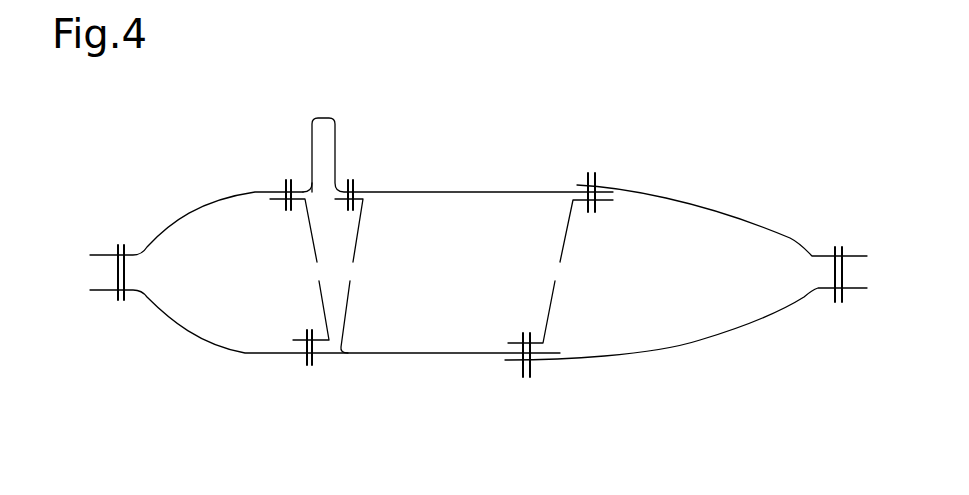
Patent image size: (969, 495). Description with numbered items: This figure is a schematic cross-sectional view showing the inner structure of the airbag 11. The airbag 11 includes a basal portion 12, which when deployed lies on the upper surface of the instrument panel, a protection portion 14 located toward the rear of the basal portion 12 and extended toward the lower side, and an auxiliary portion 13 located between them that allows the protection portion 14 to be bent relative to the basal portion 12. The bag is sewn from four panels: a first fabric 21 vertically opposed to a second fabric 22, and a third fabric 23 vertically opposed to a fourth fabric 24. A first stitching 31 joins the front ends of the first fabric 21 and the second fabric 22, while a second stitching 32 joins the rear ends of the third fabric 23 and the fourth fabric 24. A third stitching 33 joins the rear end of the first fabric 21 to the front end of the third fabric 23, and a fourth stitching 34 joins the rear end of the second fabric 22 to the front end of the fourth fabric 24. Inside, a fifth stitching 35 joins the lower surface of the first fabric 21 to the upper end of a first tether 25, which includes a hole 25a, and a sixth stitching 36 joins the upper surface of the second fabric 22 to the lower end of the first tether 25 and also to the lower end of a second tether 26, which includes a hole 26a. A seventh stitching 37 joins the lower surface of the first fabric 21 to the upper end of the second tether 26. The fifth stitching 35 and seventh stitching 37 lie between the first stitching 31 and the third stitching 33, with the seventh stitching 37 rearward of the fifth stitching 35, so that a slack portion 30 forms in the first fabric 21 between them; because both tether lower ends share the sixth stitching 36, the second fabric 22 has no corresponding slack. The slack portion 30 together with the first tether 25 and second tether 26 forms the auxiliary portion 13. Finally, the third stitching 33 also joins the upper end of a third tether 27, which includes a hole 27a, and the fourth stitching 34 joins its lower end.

The airbag 11 is at (141, 151).
The basal portion 12 is at (478, 273).
The auxiliary portion 13 is at (325, 200).
The protection portion 14 is at (681, 214).
The first fabric 21 is at (200, 203).
The second fabric 22 is at (216, 351).
The third fabric 23 is at (742, 201).
The fourth fabric 24 is at (742, 340).
The first tether 25 is at (280, 269).
The hole 25a is at (305, 270).
The second tether 26 is at (386, 276).
The hole 26a is at (358, 281).
The third tether 27 is at (574, 271).
The hole 27a is at (563, 282).
The slack portion 30 is at (326, 117).
The first stitching 31 is at (116, 301).
The second stitching 32 is at (836, 304).
The third stitching 33 is at (585, 172).
The fourth stitching 34 is at (524, 378).
The fifth stitching 35 is at (285, 181).
The sixth stitching 36 is at (308, 366).
The seventh stitching 37 is at (351, 181).